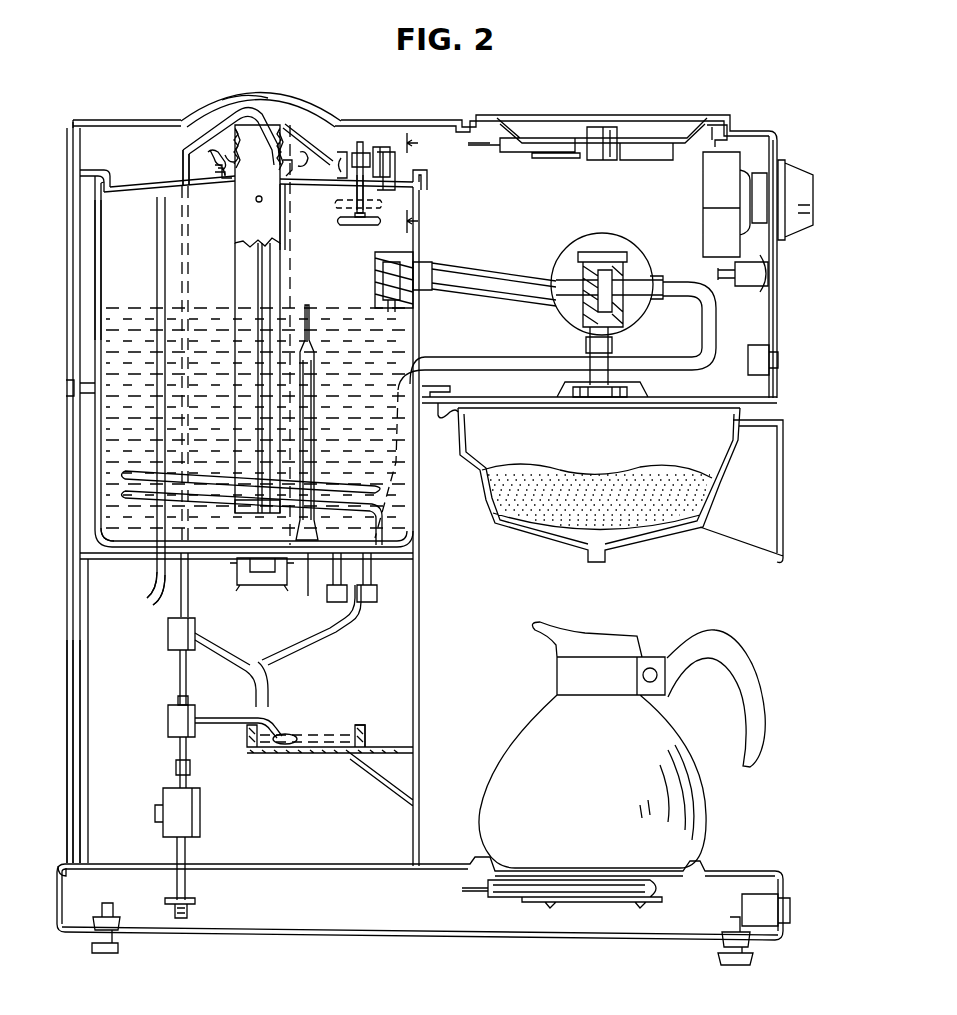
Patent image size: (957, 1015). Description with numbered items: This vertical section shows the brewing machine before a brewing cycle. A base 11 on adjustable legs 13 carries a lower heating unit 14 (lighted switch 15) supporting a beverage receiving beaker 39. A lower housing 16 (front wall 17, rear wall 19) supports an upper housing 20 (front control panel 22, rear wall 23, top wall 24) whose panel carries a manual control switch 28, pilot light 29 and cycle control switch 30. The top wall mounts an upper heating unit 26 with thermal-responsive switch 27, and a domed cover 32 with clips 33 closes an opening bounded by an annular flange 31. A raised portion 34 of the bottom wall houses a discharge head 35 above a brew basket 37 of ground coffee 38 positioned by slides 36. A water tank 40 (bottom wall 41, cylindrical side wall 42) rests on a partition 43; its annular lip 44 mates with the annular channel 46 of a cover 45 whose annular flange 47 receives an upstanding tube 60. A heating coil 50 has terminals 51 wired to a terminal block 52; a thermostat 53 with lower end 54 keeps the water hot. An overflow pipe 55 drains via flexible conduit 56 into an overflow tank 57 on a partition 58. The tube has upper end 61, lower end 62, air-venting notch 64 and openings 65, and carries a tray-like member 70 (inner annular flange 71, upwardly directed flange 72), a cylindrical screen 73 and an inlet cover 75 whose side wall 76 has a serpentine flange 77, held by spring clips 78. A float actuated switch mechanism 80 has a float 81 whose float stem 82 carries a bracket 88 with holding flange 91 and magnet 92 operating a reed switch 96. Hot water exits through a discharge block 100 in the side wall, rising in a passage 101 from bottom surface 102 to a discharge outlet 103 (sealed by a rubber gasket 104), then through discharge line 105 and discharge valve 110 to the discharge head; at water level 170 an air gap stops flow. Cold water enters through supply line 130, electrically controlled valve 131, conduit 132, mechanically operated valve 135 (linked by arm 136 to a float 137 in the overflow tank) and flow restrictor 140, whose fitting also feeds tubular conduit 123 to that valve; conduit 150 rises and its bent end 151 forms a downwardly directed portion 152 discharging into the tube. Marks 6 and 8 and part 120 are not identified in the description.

The armature rod 6 is at (172, 604).
The section line 8 is at (422, 183).
The base portion 11 is at (249, 946).
The adjustably mounted legs 13 is at (120, 948).
The lower heating unit 14 is at (500, 895).
The lighted switch 15 is at (792, 912).
The lower housing 16 is at (70, 705).
The front wall 17 is at (421, 782).
The rear wall 19 is at (70, 775).
The upper housing 20 is at (68, 254).
The front control panel 22 is at (778, 312).
The rear wall 23 is at (78, 315).
The top wall 24 is at (118, 120).
The upper heating unit 26 is at (548, 138).
The thermal-responsive switch 27 is at (605, 128).
The manual control switch 28 is at (808, 192).
The pilot light 29 is at (777, 275).
The cycle control switch 30 is at (780, 362).
The annular flange 31 is at (330, 118).
The domed cover 32 is at (235, 98).
The clips 33 is at (210, 104).
The raised portion 34 is at (650, 390).
The discharge head 35 is at (595, 395).
The slides 36 is at (442, 420).
The brew basket 37 is at (497, 500).
The ground coffee 38 is at (685, 485).
The beverage receiving beaker 39 is at (690, 786).
The water tank 40 is at (92, 388).
The bottom wall 41 is at (150, 545).
The cylindrical side wall 42 is at (95, 498).
The partition 43 is at (88, 565).
The annular lip 44 is at (92, 181).
The cover 45 is at (127, 192).
The annular channel 46 is at (104, 176).
The annular flange 47 is at (283, 200).
The heating coil 50 is at (140, 470).
The terminals 51 is at (372, 600).
The terminal block 52 is at (236, 578).
The thermostat 53 is at (316, 358).
The lower end 54 is at (308, 596).
The overflow pipe 55 is at (157, 288).
The flexible conduit 56 is at (272, 700).
The overflow tank 57 is at (374, 741).
The partition 58 is at (278, 753).
The upstanding tube 60 is at (237, 294).
The upper end 61 is at (262, 170).
The lower end 62 is at (245, 510).
The rectangular notch 64 is at (224, 180).
The openings 65 is at (258, 204).
The tray like member 70 is at (212, 170).
The inner downwardly turned annular flange 71 is at (236, 165).
The upwardly directed flange 72 is at (212, 157).
The cylindrical screen 73 is at (240, 145).
The inlet cover 75 is at (293, 125).
The side wall 76 is at (285, 150).
The serpentine flange 77 is at (297, 178).
The spring clips 78 is at (220, 174).
The float actuated switch mechanism 80 is at (406, 165).
The float 81 is at (365, 225).
The float stem 82 is at (360, 221).
The bracket 88 is at (387, 154).
The holding flange 91 is at (347, 160).
The magnet 92 is at (360, 142).
The reed switch 96 is at (345, 200).
The discharge block 100 is at (363, 278).
The vertically disposed passage 101 is at (383, 290).
The bottom surface 102 is at (388, 310).
The discharge outlet 103 is at (470, 272).
The rubber gasket 104 is at (428, 262).
The discharge line 105 is at (470, 298).
The discharge valve 110 is at (657, 255).
The valve outlet 120 is at (590, 345).
The tubular conduit 123 is at (710, 325).
The water supply line 130 is at (187, 885).
The electrically controlled valve 131 is at (172, 822).
The conduit 132 is at (178, 776).
The mechanically operated valve 135 is at (166, 720).
The arm 136 is at (235, 724).
The float 137 is at (290, 735).
The flow restrictor 140 is at (160, 639).
The conduit 150 is at (168, 590).
The bent upper end 151 is at (183, 158).
The downwardly directed portion 152 is at (252, 108).
The lowered water level 170 is at (306, 318).